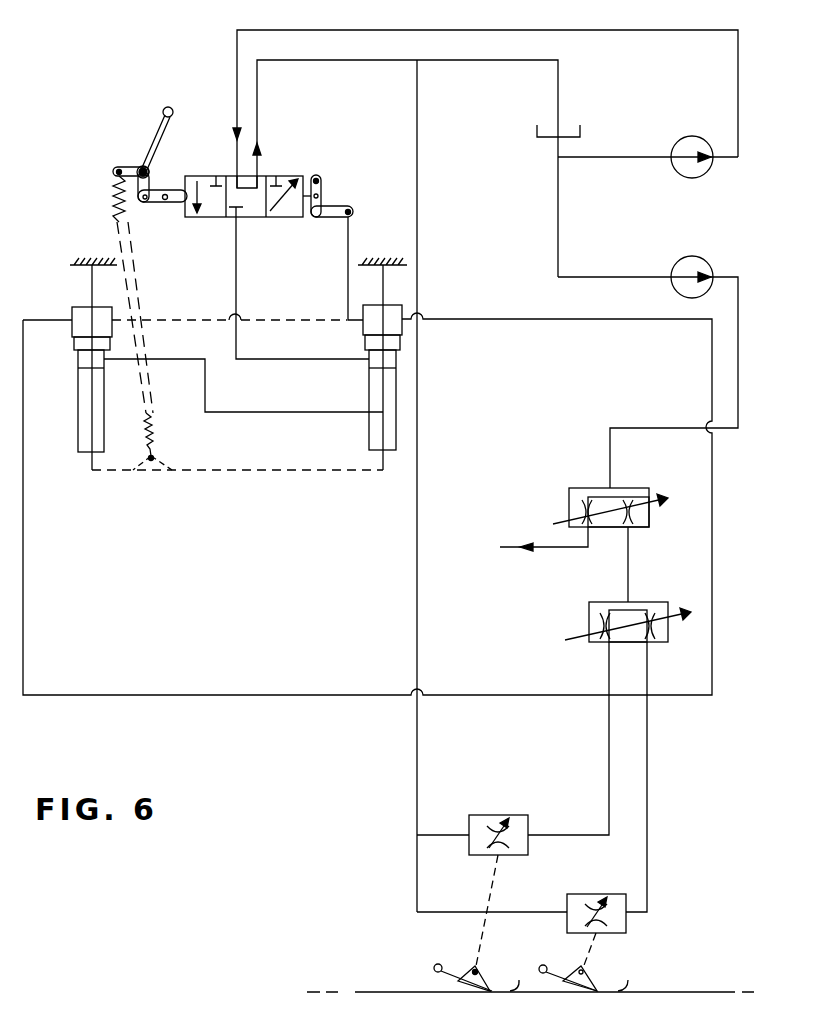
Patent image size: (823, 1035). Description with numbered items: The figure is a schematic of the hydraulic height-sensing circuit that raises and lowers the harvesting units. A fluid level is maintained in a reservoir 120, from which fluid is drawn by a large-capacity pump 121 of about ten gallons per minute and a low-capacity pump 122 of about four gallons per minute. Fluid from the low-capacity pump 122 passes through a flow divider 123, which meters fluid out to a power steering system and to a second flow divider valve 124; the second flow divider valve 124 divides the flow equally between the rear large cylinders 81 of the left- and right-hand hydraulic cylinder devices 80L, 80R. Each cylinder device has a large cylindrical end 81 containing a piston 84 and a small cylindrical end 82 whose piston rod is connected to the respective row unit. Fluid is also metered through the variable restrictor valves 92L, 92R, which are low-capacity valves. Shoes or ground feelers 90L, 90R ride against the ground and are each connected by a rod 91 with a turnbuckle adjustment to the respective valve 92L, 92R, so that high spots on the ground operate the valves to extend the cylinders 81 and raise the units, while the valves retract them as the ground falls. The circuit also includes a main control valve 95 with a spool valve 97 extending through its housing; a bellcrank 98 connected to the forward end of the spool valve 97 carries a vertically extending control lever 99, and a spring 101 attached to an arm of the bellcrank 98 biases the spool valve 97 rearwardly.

The right-hand hydraulic power unit 80R is at (72, 408).
The left-hand hydraulic power unit 80L is at (362, 393).
The large cylindrical end 81 is at (86, 310).
The small cylindrical end 82 is at (100, 427).
The piston 84 is at (80, 330).
The right shoe or ground feeler 90R is at (497, 990).
The left shoe or ground feeler 90L is at (604, 990).
The rod 91 is at (478, 935).
The right variable restrictor valve 92R is at (492, 815).
The left variable restrictor valve 92L is at (582, 894).
The main control valve 95 is at (286, 228).
The spool valve 97 is at (175, 192).
The bellcrank 98 is at (151, 178).
The control lever 99 is at (155, 137).
The spring 101 is at (127, 215).
The reservoir 120 is at (582, 132).
The large-capacity pump 121 is at (690, 178).
The low-capacity pump 122 is at (672, 284).
The flow divider 123 is at (655, 522).
The second flow divider valve 124 is at (673, 642).